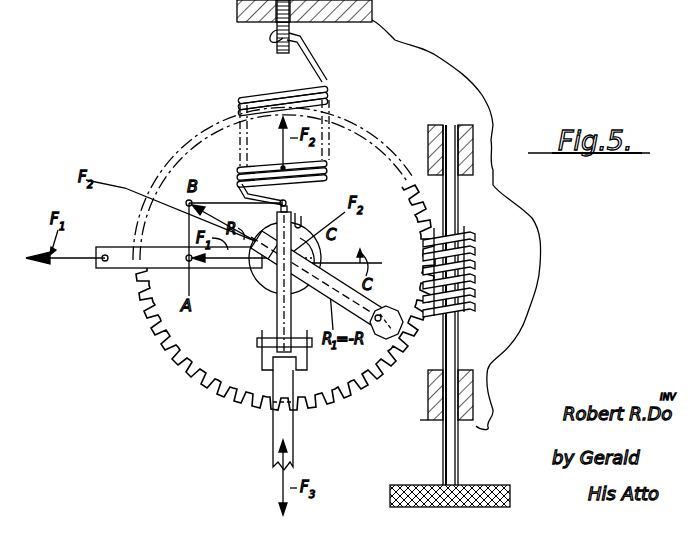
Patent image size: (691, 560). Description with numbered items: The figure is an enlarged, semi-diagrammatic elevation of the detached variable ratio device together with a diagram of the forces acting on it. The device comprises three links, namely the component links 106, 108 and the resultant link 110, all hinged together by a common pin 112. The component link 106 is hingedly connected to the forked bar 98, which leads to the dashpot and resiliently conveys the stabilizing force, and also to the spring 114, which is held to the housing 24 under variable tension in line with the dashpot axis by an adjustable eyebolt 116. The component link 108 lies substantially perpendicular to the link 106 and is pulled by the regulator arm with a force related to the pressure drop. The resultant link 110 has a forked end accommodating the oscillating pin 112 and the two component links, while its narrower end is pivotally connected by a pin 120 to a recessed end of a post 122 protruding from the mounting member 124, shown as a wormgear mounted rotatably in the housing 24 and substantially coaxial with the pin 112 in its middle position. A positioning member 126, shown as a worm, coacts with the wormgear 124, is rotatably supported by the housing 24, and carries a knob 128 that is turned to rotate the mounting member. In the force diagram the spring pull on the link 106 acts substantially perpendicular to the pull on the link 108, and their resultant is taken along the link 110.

The housing 24 is at (373, 17).
The forked bar 98 is at (297, 432).
The component link 106 is at (283, 313).
The component link 108 is at (114, 255).
The resultant link 110 is at (346, 278).
The common pin 112 is at (258, 288).
The spring 114 is at (333, 86).
The eyebolt 116 is at (276, 49).
The pin 120 is at (387, 310).
The post 122 is at (380, 340).
The mounting member 124 is at (369, 138).
The positioning member 126 is at (478, 250).
The knob 128 is at (470, 486).